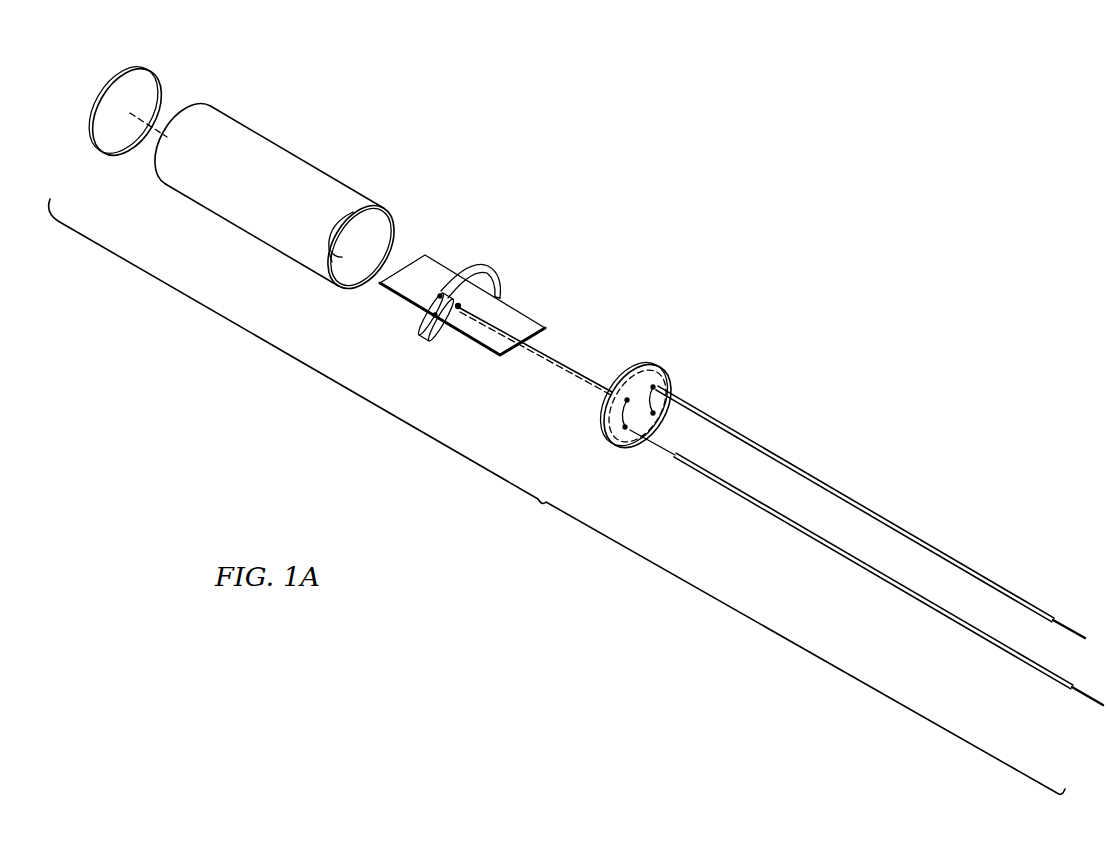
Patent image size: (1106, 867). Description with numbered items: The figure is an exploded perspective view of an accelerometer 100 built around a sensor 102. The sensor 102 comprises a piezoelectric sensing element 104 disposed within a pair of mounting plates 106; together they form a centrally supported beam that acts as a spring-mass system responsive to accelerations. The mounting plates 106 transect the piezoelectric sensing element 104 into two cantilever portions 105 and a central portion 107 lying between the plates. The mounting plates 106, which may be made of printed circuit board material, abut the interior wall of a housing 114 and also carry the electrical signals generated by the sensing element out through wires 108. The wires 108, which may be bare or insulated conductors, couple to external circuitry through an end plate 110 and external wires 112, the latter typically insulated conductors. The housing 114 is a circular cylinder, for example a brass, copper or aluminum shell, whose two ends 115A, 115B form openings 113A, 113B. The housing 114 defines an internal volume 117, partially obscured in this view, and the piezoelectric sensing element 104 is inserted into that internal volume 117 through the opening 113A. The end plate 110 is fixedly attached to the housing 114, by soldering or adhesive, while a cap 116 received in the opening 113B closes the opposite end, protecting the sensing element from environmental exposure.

The accelerometer 100 is at (541, 504).
The sensor 102 is at (489, 319).
The piezoelectric sensing element 104 is at (440, 263).
The cantilever portions 105 is at (413, 287).
The mounting plates 106 is at (493, 280).
The central portion 107 is at (420, 323).
The wires 108 is at (517, 337).
The end plate 110 is at (648, 378).
The external wires 112 is at (752, 438).
The opening 113A is at (372, 235).
The opening 113B is at (150, 167).
The housing 114 is at (265, 167).
The end 115A is at (388, 207).
The end 115B is at (203, 102).
The cap 116 is at (143, 87).
The internal volume 117 is at (330, 280).